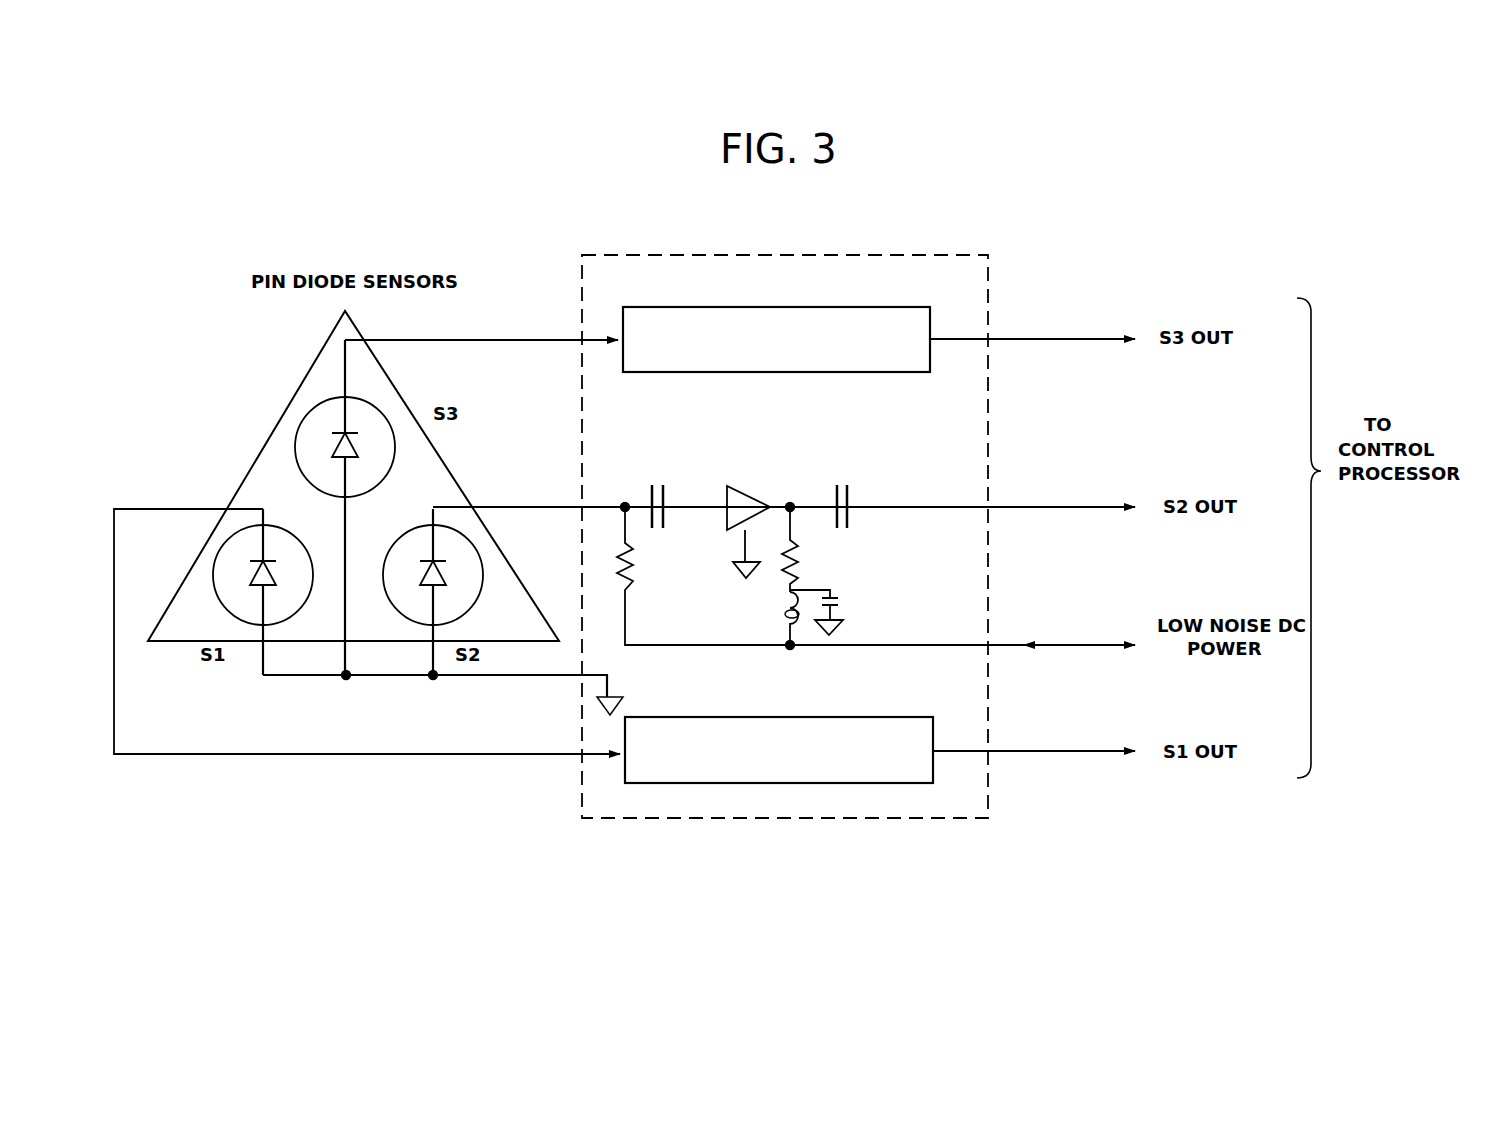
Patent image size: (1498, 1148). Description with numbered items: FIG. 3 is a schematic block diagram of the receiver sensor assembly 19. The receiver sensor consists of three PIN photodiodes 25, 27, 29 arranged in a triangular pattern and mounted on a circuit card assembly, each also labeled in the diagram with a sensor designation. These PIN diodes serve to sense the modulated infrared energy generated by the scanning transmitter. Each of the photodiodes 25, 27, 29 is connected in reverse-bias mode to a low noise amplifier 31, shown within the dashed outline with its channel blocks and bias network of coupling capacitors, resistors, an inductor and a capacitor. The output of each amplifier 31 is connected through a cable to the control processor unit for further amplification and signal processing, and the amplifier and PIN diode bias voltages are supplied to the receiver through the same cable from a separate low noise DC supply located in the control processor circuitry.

The sensor electronics board 19 is at (596, 853).
The PIN photodiode 25 is at (213, 586).
The PIN photodiode 27 is at (477, 584).
The PIN photodiode 29 is at (299, 436).
The low noise amplifier 31 is at (843, 818).